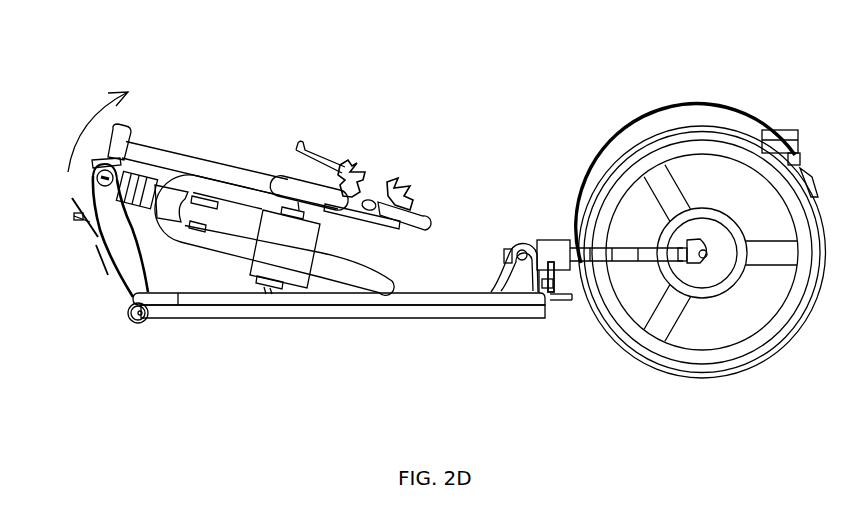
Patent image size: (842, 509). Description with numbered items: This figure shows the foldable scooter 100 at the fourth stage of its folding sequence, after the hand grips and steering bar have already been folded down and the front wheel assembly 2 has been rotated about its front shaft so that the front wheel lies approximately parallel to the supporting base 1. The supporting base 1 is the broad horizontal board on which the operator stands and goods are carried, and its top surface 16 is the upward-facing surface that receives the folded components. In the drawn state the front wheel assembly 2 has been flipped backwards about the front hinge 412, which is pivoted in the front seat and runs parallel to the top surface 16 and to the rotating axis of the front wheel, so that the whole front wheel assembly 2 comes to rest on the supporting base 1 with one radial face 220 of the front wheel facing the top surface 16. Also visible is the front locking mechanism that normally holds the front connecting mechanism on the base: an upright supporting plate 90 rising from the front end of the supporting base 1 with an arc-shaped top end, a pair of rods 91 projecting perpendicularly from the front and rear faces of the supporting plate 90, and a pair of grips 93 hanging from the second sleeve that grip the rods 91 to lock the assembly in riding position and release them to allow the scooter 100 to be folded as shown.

The supporting base 1 is at (307, 357).
The front wheel assembly 2 is at (242, 100).
The top surface 16 is at (428, 292).
The upright supporting plate 90 is at (550, 293).
The rods 91 is at (547, 288).
The grips 93 is at (544, 284).
The foldable scooter 100 is at (563, 65).
The radial faces 220 is at (197, 268).
The front hinge 412 is at (98, 180).